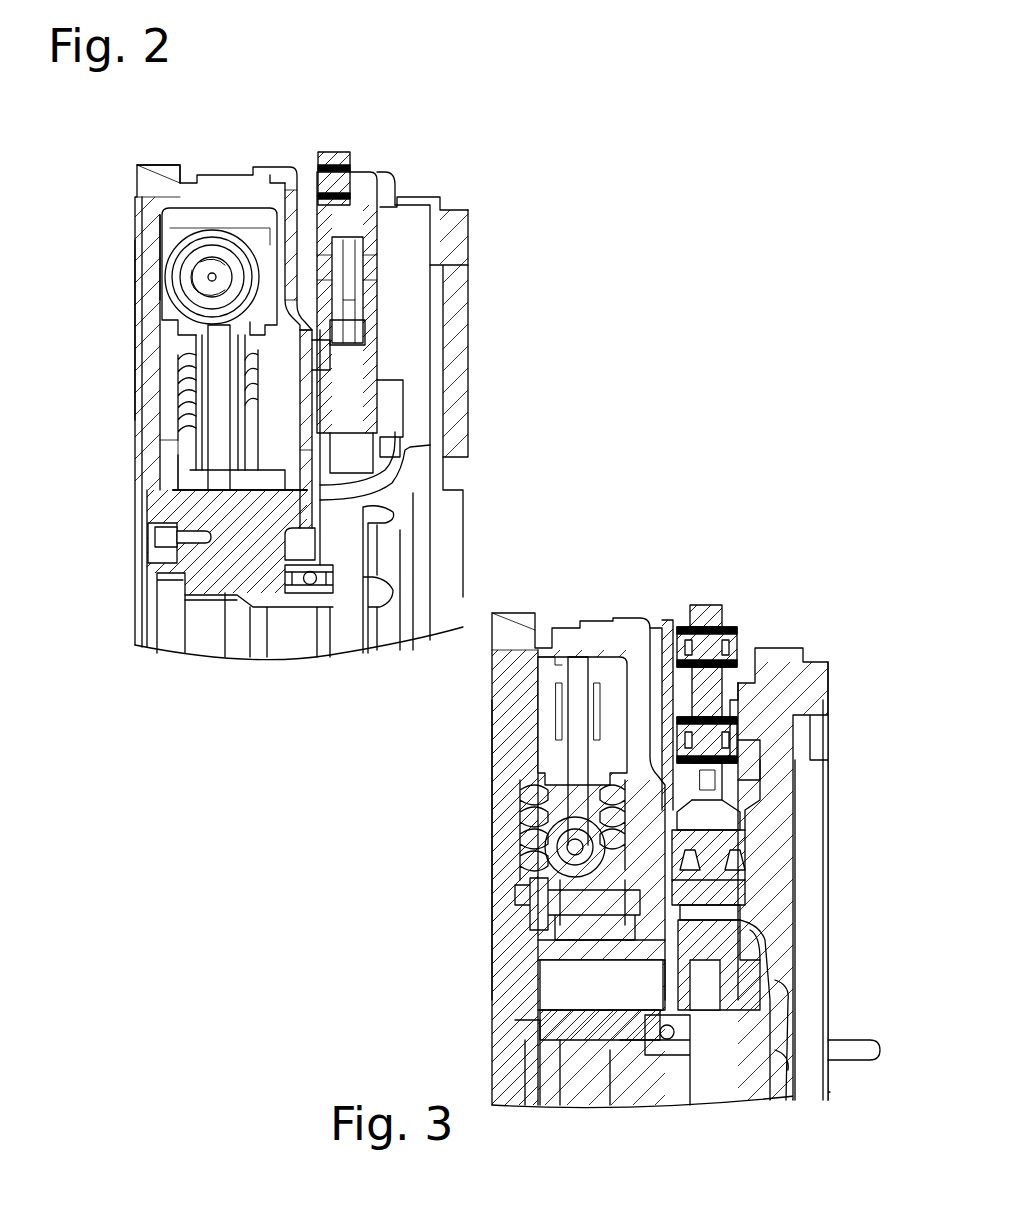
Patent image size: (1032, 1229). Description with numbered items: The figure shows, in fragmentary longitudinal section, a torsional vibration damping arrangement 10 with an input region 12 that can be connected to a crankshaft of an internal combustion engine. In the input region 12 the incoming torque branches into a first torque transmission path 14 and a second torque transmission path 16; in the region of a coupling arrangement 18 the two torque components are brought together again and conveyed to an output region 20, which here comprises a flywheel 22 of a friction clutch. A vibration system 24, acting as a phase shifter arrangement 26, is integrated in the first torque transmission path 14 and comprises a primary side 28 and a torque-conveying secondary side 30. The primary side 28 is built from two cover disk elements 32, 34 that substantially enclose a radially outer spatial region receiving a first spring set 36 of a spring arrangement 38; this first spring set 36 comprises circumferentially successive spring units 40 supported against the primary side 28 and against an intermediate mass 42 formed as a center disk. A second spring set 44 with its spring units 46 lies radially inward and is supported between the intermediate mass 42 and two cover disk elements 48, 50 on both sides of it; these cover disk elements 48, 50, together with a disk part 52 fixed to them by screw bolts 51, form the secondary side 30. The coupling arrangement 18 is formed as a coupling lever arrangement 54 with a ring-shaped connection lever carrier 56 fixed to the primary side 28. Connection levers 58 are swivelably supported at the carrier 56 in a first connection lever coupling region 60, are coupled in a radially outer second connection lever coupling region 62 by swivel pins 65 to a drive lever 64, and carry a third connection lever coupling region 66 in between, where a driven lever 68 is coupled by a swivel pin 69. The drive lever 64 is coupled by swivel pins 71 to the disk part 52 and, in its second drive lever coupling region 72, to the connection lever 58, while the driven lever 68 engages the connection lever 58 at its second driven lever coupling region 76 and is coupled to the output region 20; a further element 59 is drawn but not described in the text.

In FIG. 2, the torsional vibration damping arrangement 10 is at (515, 75).
In FIG. 3, the torsional vibration damping arrangement 10 is at (553, 577).
In FIG. 2, the input region 12 is at (122, 370).
In FIG. 3, the input region 12 is at (475, 959).
In FIG. 2, the first torque transmission path 14 is at (126, 181).
In FIG. 3, the first torque transmission path 14 is at (460, 711).
In FIG. 2, the second torque transmission path 16 is at (284, 635).
In FIG. 3, the second torque transmission path 16 is at (588, 1067).
In FIG. 2, the coupling arrangement 18 is at (380, 149).
In FIG. 3, the coupling arrangement 18 is at (735, 601).
In FIG. 2, the output region 20 is at (455, 182).
In FIG. 3, the output region 20 is at (818, 651).
In FIG. 2, the flywheel 22 is at (420, 297).
In FIG. 2, the vibration system 24 is at (199, 133).
In FIG. 2, the phase shifter arrangement 26 is at (137, 146).
In FIG. 2, the primary side 28 is at (128, 259).
In FIG. 3, the primary side 28 is at (492, 864).
In FIG. 2, the secondary side 30 is at (302, 431).
In FIG. 2, the cover disk element 32 is at (152, 216).
In FIG. 2, the cover disk element 34 is at (283, 181).
In FIG. 2, the first spring set 36 is at (190, 222).
In FIG. 2, the spring arrangement 38 is at (225, 222).
In FIG. 2, the spring unit 40 is at (172, 277).
In FIG. 2, the intermediate mass 42 is at (216, 427).
In FIG. 2, the second spring set 44 is at (160, 397).
In FIG. 2, the spring unit 46 is at (185, 371).
In FIG. 2, the cover disk element 48 is at (200, 461).
In FIG. 2, the cover disk element 50 is at (213, 510).
In FIG. 3, the screw bolt 51 is at (495, 911).
In FIG. 2, the disk part 52 is at (315, 366).
In FIG. 3, the disk part 52 is at (662, 707).
In FIG. 3, the coupling lever arrangement 54 is at (704, 596).
In FIG. 2, the connection lever carrier 56 is at (213, 568).
In FIG. 3, the connection lever carrier 56 is at (562, 1023).
In FIG. 2, the connection lever 58 is at (352, 274).
In FIG. 3, the connection lever 58 is at (713, 896).
In FIG. 3, the worm gear 59 is at (585, 904).
In FIG. 3, the first connection lever coupling region 60 is at (772, 871).
In FIG. 3, the second connection lever coupling region 62 is at (745, 632).
In FIG. 2, the drive lever 64 is at (372, 212).
In FIG. 3, the drive lever 64 is at (650, 639).
In FIG. 3, the swivel pin 65 is at (684, 624).
In FIG. 3, the third connection lever coupling region 66 is at (763, 786).
In FIG. 2, the driven lever 68 is at (372, 323).
In FIG. 3, the driven lever 68 is at (745, 757).
In FIG. 3, the swivel pin 69 is at (735, 701).
In FIG. 2, the swivel pin 71 is at (334, 161).
In FIG. 3, the second drive lever coupling region 72 is at (747, 732).
In FIG. 3, the second driven lever coupling region 76 is at (763, 752).